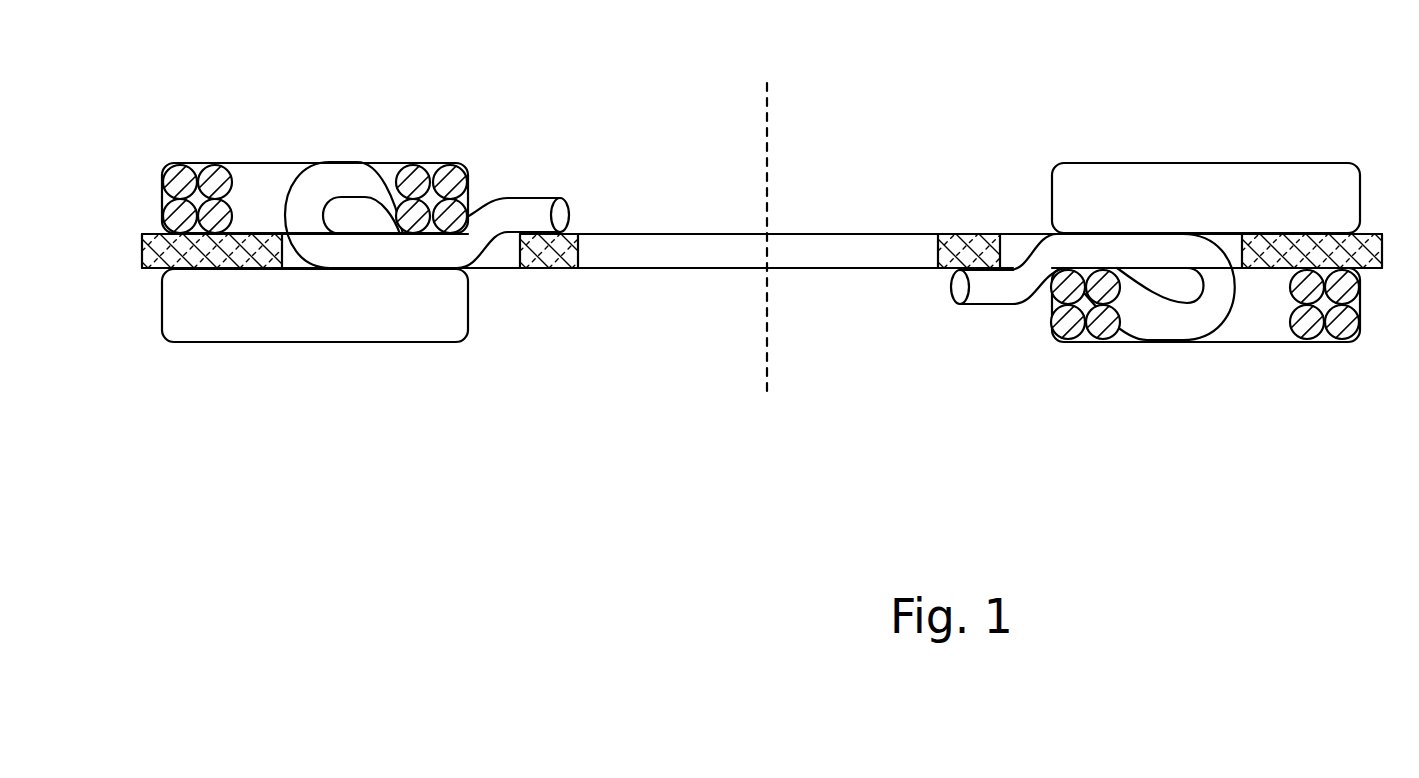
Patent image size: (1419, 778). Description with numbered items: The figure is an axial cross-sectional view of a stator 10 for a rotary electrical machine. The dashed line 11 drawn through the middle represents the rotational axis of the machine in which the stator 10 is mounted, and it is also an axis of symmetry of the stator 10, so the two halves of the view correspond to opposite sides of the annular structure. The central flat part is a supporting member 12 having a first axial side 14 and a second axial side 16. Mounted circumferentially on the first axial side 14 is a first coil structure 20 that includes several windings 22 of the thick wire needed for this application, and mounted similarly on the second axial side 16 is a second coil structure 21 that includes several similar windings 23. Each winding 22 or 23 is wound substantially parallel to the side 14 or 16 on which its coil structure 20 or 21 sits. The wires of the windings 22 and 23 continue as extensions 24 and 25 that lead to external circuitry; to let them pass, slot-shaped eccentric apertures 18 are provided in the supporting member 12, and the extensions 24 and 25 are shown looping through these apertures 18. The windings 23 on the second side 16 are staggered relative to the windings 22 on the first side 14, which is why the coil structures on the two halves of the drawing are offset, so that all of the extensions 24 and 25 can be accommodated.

The stator 10 is at (281, 399).
The dashed line 11 is at (772, 121).
The supporting member 12 is at (143, 256).
The first axial side 14 is at (948, 236).
The second axial side 16 is at (553, 257).
The slot-shaped eccentric apertures 18 is at (502, 268).
The first coil structure 20 is at (445, 145).
The second coil structure 21 is at (186, 352).
The windings 22 is at (278, 213).
The windings 23 is at (292, 323).
The extension 24 is at (407, 253).
The extension 25 is at (1130, 250).